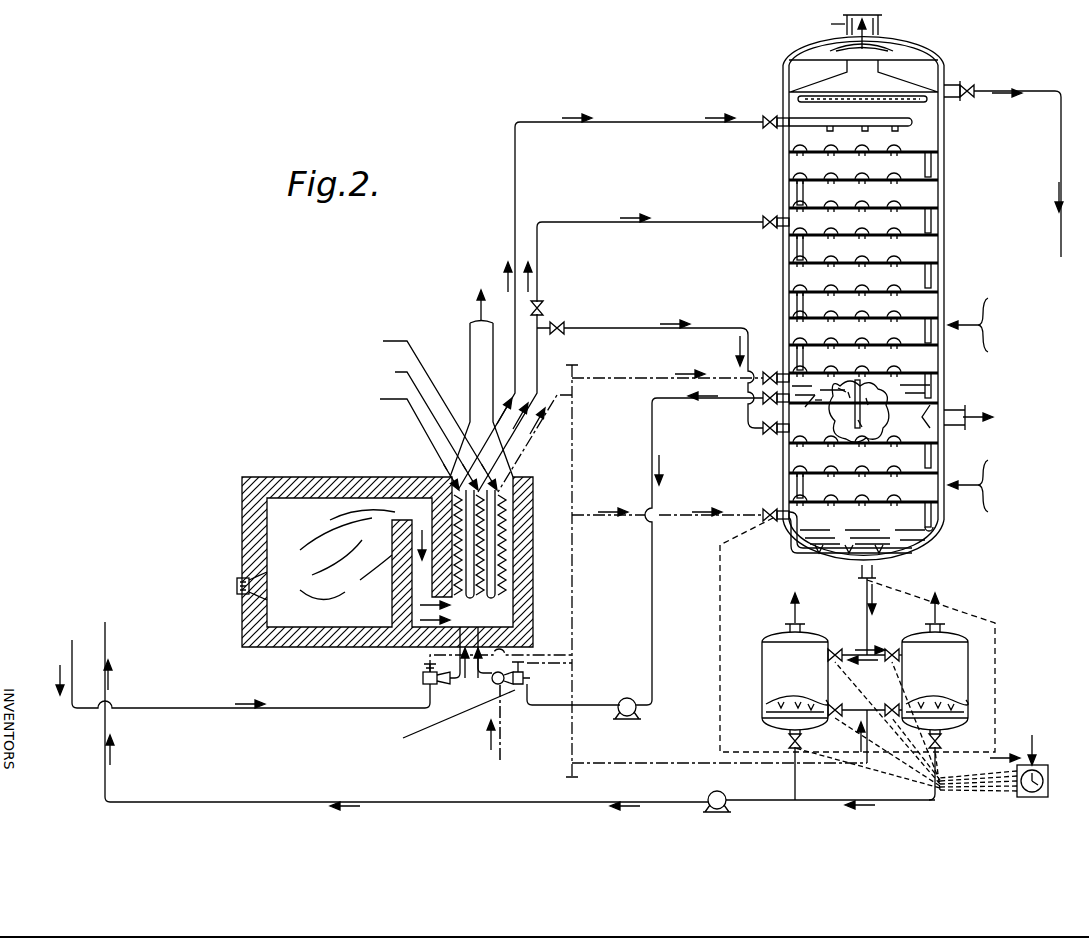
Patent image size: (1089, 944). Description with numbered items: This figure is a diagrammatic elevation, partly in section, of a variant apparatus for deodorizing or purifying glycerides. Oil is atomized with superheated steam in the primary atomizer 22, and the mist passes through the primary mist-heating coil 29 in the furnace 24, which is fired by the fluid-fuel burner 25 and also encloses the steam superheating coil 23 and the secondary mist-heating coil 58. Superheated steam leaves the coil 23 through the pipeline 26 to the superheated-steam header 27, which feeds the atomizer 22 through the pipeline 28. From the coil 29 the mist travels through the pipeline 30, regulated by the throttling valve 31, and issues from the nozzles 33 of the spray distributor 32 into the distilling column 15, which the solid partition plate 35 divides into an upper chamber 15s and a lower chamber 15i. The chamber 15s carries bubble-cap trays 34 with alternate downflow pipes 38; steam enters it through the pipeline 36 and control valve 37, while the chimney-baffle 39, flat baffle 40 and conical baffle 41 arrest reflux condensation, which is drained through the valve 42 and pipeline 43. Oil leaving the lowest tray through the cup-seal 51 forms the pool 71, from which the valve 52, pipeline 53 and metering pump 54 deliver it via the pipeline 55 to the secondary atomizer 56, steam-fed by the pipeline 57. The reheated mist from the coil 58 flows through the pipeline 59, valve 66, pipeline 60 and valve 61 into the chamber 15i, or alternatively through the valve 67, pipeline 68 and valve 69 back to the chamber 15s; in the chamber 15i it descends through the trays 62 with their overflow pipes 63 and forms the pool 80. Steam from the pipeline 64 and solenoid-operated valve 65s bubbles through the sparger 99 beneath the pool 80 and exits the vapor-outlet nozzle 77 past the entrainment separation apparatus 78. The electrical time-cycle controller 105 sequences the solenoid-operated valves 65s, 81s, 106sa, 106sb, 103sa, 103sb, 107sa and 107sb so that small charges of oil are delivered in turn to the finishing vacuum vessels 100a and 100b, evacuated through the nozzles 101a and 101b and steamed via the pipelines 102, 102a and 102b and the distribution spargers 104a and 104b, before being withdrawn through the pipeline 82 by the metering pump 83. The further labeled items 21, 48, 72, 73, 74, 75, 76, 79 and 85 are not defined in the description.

The distilling column 15 is at (790, 60).
The upper distilling chamber 15s is at (940, 318).
The lower distilling chamber 15i is at (940, 520).
The oil feed pipe 21 is at (237, 669).
The primary atomizer 22 is at (423, 690).
The steam superheating coil 23 is at (503, 590).
The furnace 24 is at (368, 478).
The fluid-fuel burner 25 is at (238, 586).
The pipeline 26 is at (528, 446).
The superheated-steam header 27 is at (575, 378).
The pipeline 28 is at (560, 652).
The primary mist-heating coil 29 is at (468, 584).
The pipeline 30 is at (515, 216).
The throttling valve 31 is at (770, 116).
The spray distributor 32 is at (895, 103).
The nozzles 33 is at (831, 129).
The bubble-cap trays 34 is at (789, 158).
The partition plate 35 is at (874, 411).
The pipeline 36 is at (667, 371).
The control valve 37 is at (772, 372).
The downflow pipes 38 is at (931, 165).
The arresting chimney-baffle 39 is at (948, 86).
The flat baffle 40 is at (893, 92).
The conical baffle 41 is at (893, 50).
The valve 42 is at (962, 96).
The pipeline 43 is at (1059, 93).
The vacuum nozzle 48 is at (882, 22).
The cup-seal 51 is at (945, 386).
The valve 52 is at (778, 404).
The pipeline 53 is at (676, 400).
The metering pump 54 is at (636, 691).
The pipeline 55 is at (606, 705).
The secondary atomizer 56 is at (528, 690).
The pipeline 57 is at (530, 669).
The secondary mist-heating coil 58 is at (484, 584).
The pipeline 59 is at (540, 360).
The pipeline 60 is at (741, 331).
The valve 61 is at (779, 434).
The bubble-cap trays 62 is at (842, 452).
The overflow pipes 63 is at (938, 452).
The pipeline 64 is at (773, 510).
The solenoid-operated valve 65s is at (771, 522).
The valve 66 is at (565, 326).
The valve 67 is at (546, 305).
The pipeline 68 is at (672, 220).
The valve 69 is at (770, 216).
The pool 71 is at (806, 410).
The separator part 72 is at (815, 395).
The separator part 73 is at (837, 385).
The separator part 74 is at (869, 427).
The separator part 75 is at (876, 399).
The separator part 76 is at (853, 396).
The nozzle 77 is at (962, 412).
The entrainment separation apparatus 78 is at (919, 423).
The bottom downcomer 79 is at (925, 528).
The pool 80 is at (870, 545).
The solenoid-operated valve 81s is at (863, 588).
The pipeline 82 is at (791, 800).
The metering pump 83 is at (710, 797).
The return line 85 is at (450, 801).
The sparger 99 is at (864, 576).
The finishing vacuum vessel 100a is at (765, 652).
The finishing vacuum vessel 100b is at (970, 656).
The nozzle 101a is at (790, 628).
The nozzle 101b is at (940, 628).
The pipeline 102 is at (630, 766).
The pipeline 102a is at (840, 718).
The pipeline 102b is at (898, 702).
The solenoid-operated valve 103sa is at (820, 706).
The solenoid-operated valve 103sb is at (958, 694).
The distribution sparger 104a is at (808, 712).
The distribution sparger 104b is at (966, 706).
The electrical time-cycle controller 105 is at (1048, 784).
The solenoid-operated valve 106sa is at (838, 648).
The solenoid-operated valve 106sb is at (893, 648).
The solenoid-operated valve 107sa is at (788, 744).
The solenoid-operated valve 107sb is at (938, 748).